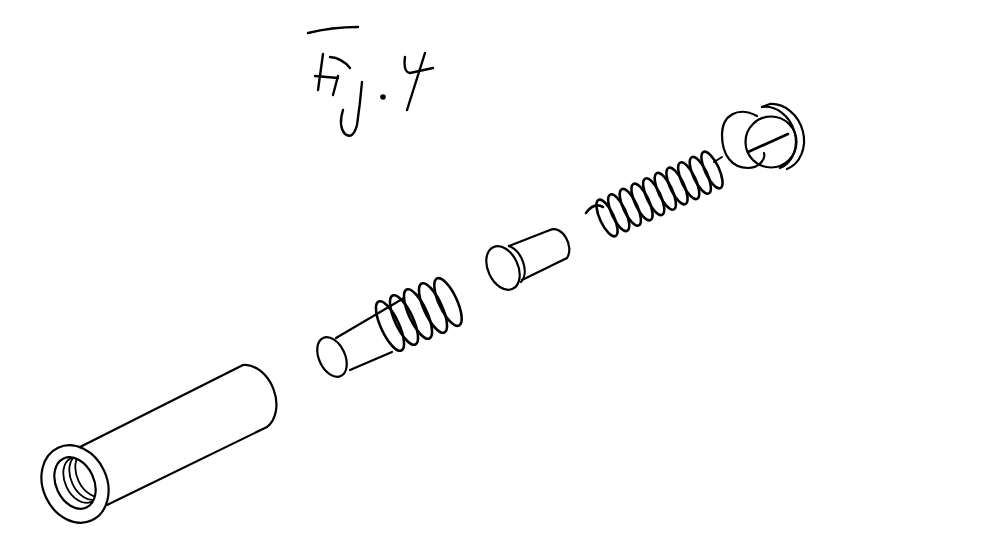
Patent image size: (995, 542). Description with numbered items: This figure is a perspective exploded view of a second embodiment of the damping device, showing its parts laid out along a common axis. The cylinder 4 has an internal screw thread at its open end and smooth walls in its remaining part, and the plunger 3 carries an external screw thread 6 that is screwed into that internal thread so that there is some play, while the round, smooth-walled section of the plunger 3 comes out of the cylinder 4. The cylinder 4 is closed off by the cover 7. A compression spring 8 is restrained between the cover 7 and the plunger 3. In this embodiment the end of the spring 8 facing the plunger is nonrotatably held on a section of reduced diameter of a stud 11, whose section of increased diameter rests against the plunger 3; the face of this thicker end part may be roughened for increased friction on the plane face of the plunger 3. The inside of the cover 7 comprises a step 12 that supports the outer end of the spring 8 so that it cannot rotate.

The plunger 3 is at (353, 341).
The cylinder 4 is at (157, 428).
The external screw thread 6 is at (417, 280).
The cover 7 is at (781, 108).
The spring 8 is at (643, 184).
The stud 11 is at (538, 258).
The step 12 is at (697, 100).